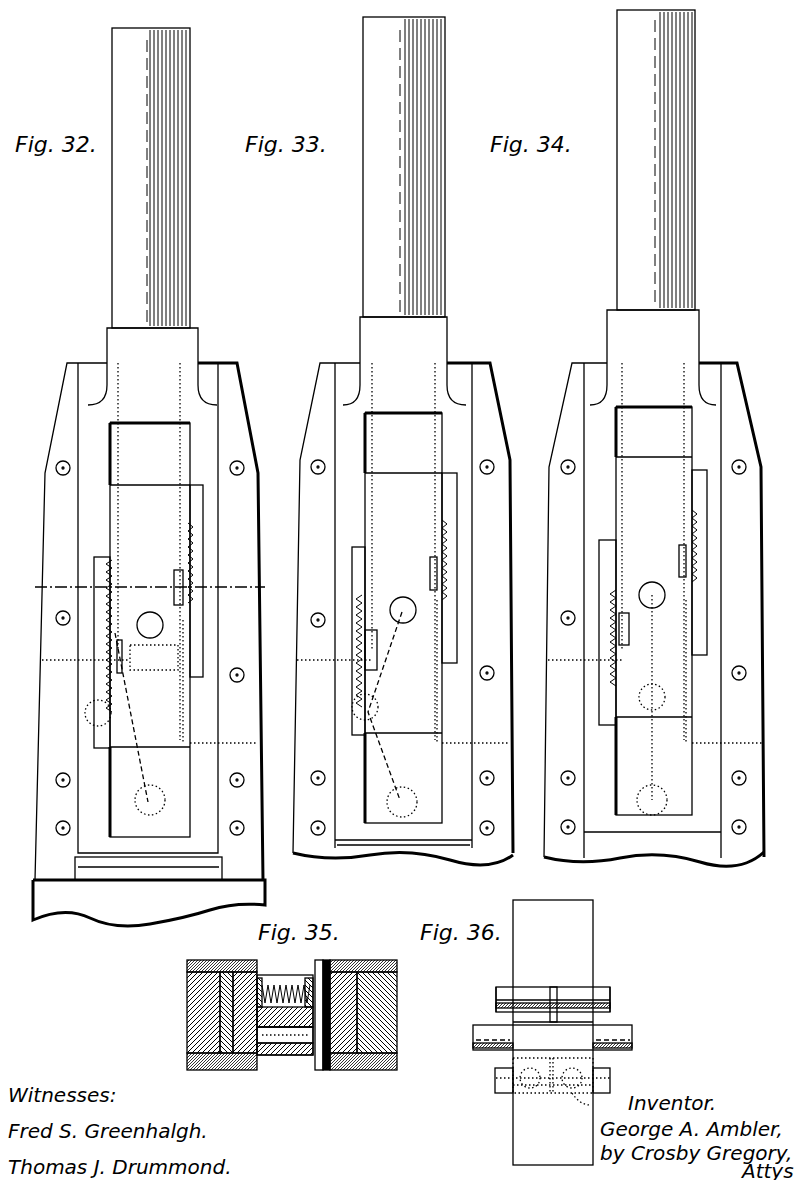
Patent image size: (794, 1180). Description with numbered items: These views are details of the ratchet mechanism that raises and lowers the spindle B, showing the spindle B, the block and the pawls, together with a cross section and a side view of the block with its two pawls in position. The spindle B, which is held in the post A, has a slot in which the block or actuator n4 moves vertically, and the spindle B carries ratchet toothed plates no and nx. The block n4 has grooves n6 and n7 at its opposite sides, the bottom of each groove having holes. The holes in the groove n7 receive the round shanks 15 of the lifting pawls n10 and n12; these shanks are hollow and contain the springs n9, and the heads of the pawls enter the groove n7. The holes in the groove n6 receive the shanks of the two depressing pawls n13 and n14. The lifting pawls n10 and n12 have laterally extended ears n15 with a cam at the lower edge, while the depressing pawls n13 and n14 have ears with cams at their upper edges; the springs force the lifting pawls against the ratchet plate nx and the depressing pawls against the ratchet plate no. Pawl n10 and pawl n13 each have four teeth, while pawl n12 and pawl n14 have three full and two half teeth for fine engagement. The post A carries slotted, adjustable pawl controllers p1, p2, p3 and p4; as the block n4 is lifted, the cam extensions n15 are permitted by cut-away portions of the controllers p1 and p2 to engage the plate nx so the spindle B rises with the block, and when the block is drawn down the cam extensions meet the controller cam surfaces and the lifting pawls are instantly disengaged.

In FIG. 32, the spindle B is at (175, 258).
In FIG. 33, the spindle B is at (432, 237).
In FIG. 34, the spindle B is at (683, 222).
In FIG. 32, the post A is at (48, 787).
In FIG. 33, the post A is at (502, 725).
In FIG. 34, the post A is at (554, 723).
In FIG. 35, the post A is at (197, 990).
In FIG. 32, the block or actuator n4 is at (178, 542).
In FIG. 33, the block or actuator n4 is at (423, 538).
In FIG. 34, the block or actuator n4 is at (686, 502).
In FIG. 35, the block or actuator n4 is at (255, 1015).
In FIG. 36, the block or actuator n4 is at (588, 947).
In FIG. 32, the groove n7 is at (173, 577).
In FIG. 33, the groove n7 is at (427, 558).
In FIG. 34, the groove n7 is at (681, 545).
In FIG. 32, the lifting pawl n10 is at (187, 580).
In FIG. 33, the lifting pawl n10 is at (443, 570).
In FIG. 34, the lifting pawl n10 is at (692, 556).
In FIG. 35, the lifting pawl n10 is at (305, 1045).
In FIG. 36, the lifting pawl n10 is at (520, 995).
In FIG. 32, the groove n6 is at (118, 640).
In FIG. 33, the groove n6 is at (373, 630).
In FIG. 34, the groove n6 is at (624, 613).
In FIG. 32, the ratchet toothed plate no is at (100, 673).
In FIG. 33, the ratchet toothed plate no is at (360, 682).
In FIG. 34, the ratchet toothed plate no is at (607, 677).
In FIG. 35, the ratchet toothed plate no is at (256, 1060).
In FIG. 34, the ratchet toothed plate nx is at (695, 575).
In FIG. 35, the pawl controller p4 is at (190, 965).
In FIG. 35, the pawl controller p3 is at (190, 1065).
In FIG. 35, the pawl controller plate p2 is at (397, 975).
In FIG. 35, the pawl controller plate p1 is at (393, 1068).
In FIG. 35, the round shank 15 is at (266, 978).
In FIG. 35, the spring n9 is at (287, 982).
In FIG. 35, the lifting pawl n12 is at (330, 1005).
In FIG. 36, the lifting pawl n12 is at (595, 995).
In FIG. 36, the laterally extended ear n15 is at (496, 995).
In FIG. 36, the depressing pawl n13 is at (533, 1095).
In FIG. 36, the depressing pawl n14 is at (598, 1103).